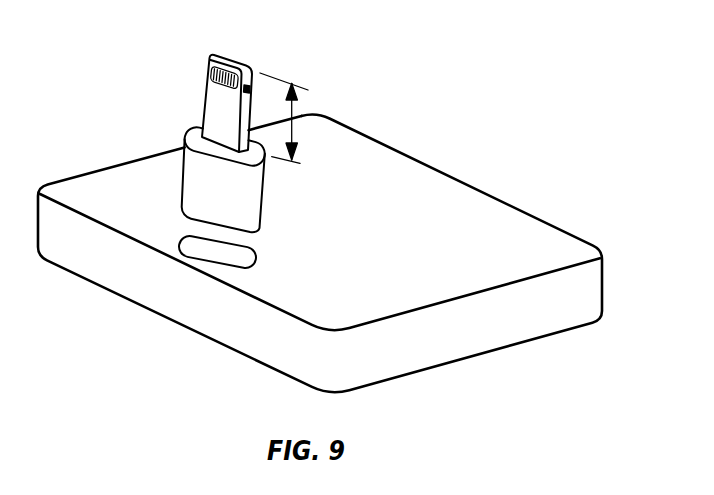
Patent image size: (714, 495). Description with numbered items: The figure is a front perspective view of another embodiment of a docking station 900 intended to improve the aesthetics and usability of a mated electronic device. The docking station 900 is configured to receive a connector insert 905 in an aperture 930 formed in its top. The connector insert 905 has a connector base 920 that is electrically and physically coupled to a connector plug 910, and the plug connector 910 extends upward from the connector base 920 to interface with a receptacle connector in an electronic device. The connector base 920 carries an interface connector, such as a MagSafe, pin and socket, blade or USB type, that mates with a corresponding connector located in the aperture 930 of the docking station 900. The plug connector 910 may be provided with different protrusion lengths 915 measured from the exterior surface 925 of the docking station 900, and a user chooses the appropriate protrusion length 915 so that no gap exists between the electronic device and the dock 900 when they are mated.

The docking station 900 is at (338, 253).
The connector insert 905 is at (187, 143).
The connector plug 910 is at (220, 100).
The protrusion length 915 is at (291, 118).
The connector base 920 is at (202, 187).
The exterior surface 925 is at (447, 184).
The aperture 930 is at (203, 248).